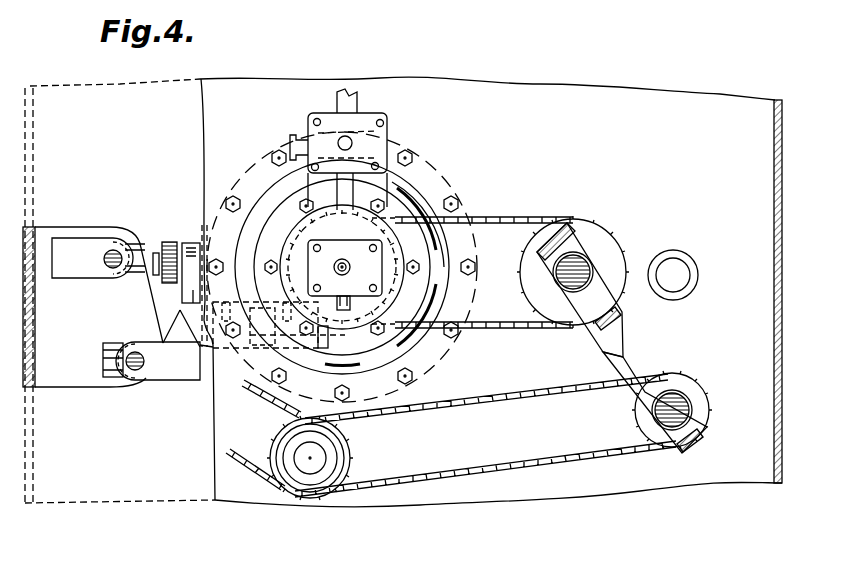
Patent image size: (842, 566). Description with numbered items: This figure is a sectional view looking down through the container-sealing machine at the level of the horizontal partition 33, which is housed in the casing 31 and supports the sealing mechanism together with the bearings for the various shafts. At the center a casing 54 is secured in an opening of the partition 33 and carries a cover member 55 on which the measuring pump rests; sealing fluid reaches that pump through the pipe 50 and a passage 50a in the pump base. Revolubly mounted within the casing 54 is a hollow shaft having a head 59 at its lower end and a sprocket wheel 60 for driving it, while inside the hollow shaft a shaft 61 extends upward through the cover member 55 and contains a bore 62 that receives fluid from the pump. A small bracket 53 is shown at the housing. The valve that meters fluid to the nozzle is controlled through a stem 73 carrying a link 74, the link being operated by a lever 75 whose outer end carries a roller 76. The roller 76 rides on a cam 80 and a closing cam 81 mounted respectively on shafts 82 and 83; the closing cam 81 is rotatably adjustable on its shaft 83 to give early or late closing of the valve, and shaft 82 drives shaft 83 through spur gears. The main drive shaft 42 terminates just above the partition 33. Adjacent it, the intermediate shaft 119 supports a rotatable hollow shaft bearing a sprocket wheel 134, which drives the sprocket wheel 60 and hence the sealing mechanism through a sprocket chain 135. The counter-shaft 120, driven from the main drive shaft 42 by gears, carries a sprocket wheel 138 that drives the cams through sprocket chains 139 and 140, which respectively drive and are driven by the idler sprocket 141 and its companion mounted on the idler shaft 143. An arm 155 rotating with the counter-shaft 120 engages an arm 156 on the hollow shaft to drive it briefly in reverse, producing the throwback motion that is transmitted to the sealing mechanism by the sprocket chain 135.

The casing 31 is at (775, 166).
The horizontal partition 33 is at (700, 481).
The main drive shaft 42 is at (673, 275).
The pipe 50 is at (350, 104).
The passage 50a is at (356, 144).
The bracket 53 is at (300, 138).
The casing 54 is at (292, 232).
The cover member 55 is at (395, 262).
The head 59 is at (346, 301).
The sprocket wheel 60 is at (368, 222).
The shaft 61 is at (350, 270).
The bore 62 is at (335, 268).
The stem 73 is at (270, 326).
The link 74 is at (330, 340).
The lever 75 is at (240, 352).
The roller 76 is at (178, 243).
The cam 80 is at (183, 370).
The closing cam 81 is at (80, 272).
The shaft 82 is at (133, 370).
The shaft 83 is at (113, 268).
The intermediate shaft 119 is at (584, 252).
The counter-shaft 120 is at (652, 416).
The sprocket wheel 134 is at (606, 250).
The sprocket chain 135 is at (504, 216).
The sprocket wheel 138 is at (695, 390).
The sprocket chain 139 is at (505, 399).
The sprocket chain 140 is at (255, 470).
The idler sprocket 141 is at (344, 459).
The idler shaft 143 is at (310, 460).
The arm 155 is at (635, 366).
The arm 156 is at (620, 322).